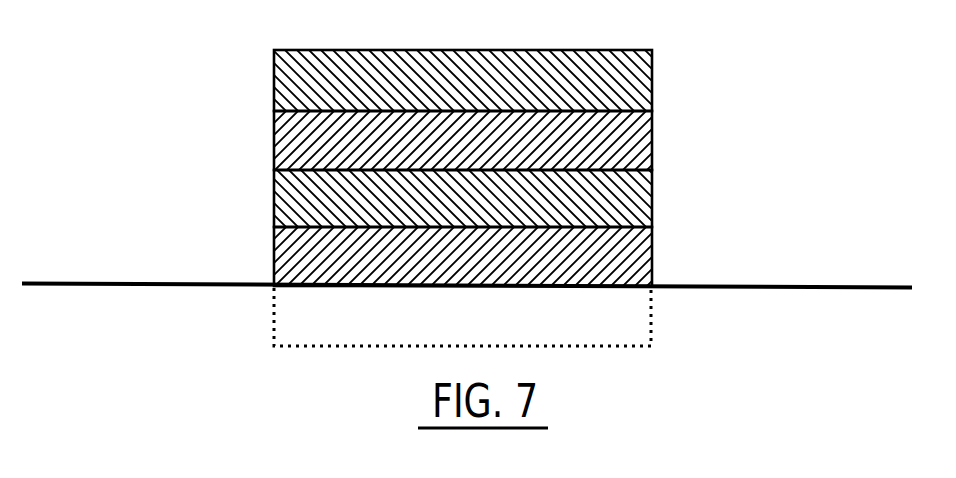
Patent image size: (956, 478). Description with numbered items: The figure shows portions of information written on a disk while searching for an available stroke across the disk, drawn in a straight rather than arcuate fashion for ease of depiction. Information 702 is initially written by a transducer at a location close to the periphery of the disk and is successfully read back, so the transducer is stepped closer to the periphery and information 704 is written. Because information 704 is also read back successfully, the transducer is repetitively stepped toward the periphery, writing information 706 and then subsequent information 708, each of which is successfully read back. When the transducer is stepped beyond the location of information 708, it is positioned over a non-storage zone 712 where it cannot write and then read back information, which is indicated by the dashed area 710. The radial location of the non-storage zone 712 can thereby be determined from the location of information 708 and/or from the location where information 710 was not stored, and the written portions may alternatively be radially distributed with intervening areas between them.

The information 702 is at (663, 52).
The information 704 is at (663, 113).
The information 706 is at (663, 172).
The information 708 is at (663, 229).
The dashed area 710 is at (662, 292).
The non-storage zone 712 is at (772, 292).